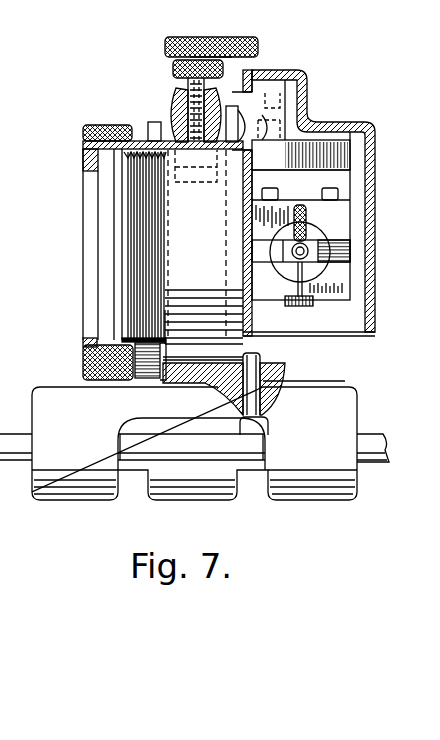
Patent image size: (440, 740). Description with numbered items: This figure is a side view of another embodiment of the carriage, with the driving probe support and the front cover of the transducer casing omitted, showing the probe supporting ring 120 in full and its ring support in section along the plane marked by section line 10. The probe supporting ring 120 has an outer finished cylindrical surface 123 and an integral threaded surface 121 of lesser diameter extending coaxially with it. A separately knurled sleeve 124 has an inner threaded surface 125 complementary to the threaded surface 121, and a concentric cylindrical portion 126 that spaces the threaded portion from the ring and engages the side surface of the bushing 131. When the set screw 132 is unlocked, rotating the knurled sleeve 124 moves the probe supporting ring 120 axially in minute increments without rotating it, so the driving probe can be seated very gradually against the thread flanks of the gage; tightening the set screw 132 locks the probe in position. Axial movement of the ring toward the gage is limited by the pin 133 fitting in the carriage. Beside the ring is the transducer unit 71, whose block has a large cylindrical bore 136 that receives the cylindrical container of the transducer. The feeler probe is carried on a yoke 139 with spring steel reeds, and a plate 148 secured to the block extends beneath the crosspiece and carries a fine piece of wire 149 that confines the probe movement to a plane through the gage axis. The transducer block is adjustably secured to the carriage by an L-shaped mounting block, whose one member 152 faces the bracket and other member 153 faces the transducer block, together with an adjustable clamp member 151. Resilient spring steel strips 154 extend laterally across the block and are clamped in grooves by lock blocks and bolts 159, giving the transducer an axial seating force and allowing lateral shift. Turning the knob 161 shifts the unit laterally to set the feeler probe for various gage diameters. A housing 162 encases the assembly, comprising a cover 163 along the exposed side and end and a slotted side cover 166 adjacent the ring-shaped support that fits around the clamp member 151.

The section line 10 is at (250, 238).
The transducer unit 71 is at (322, 272).
The probe supporting ring 120 is at (249, 344).
The threaded surface 121 is at (128, 279).
The outer finished cylindrical surface 123 is at (236, 373).
The knurled sleeve 124 is at (85, 143).
The inner threaded surface 125 is at (127, 126).
The concentric cylindrical portion 126 is at (153, 122).
The bushing 131 is at (186, 380).
The set screw 132 is at (173, 71).
The pin 133 is at (258, 399).
The cylindrical bore 136 is at (323, 280).
The yoke 139 is at (343, 236).
The plate 148 is at (292, 307).
The fine piece of wire 149 is at (313, 296).
The adjustable clamp member 151 is at (247, 72).
The member of mounting block 152 is at (282, 103).
The member of mounting block 153 is at (332, 152).
The strips 154 is at (345, 180).
The bolts 159 is at (330, 194).
The knob 161 is at (218, 44).
The housing 162 is at (388, 155).
The cover 163 is at (375, 326).
The side cover 166 is at (245, 232).